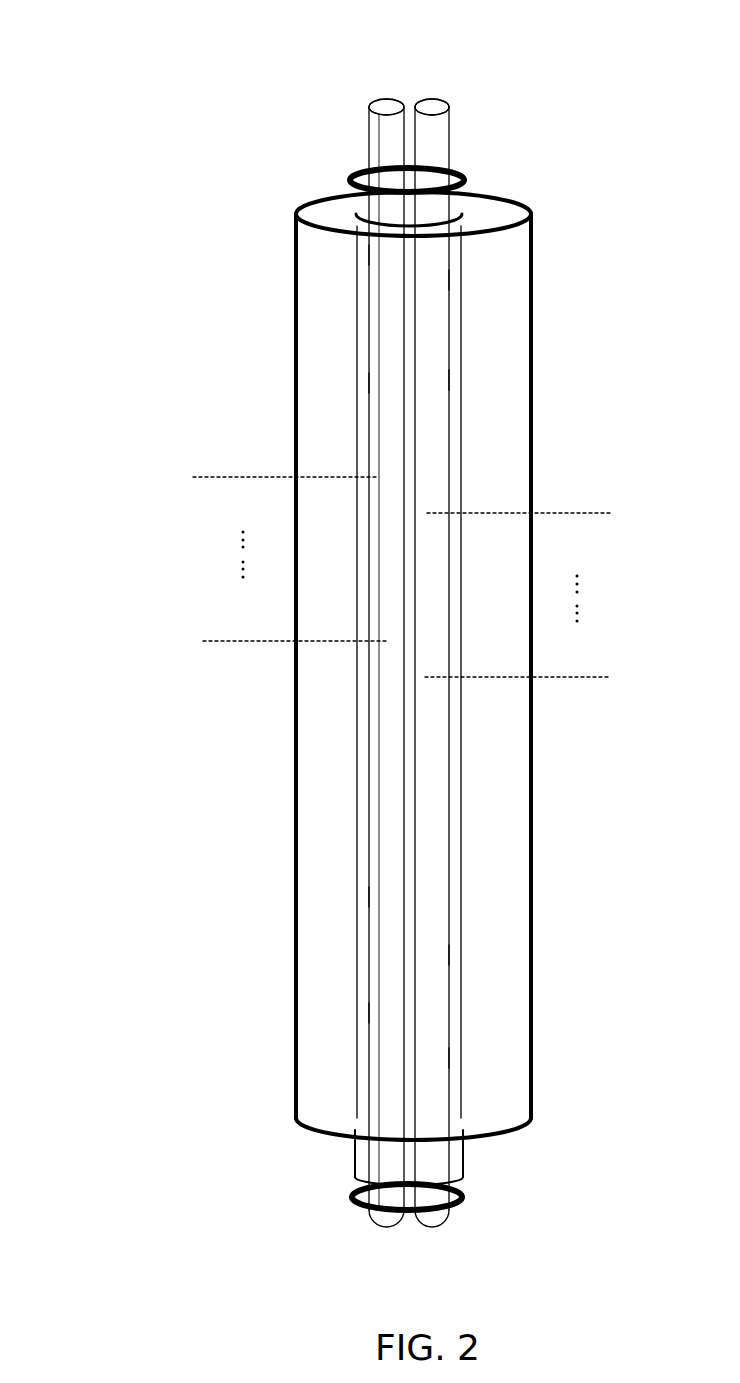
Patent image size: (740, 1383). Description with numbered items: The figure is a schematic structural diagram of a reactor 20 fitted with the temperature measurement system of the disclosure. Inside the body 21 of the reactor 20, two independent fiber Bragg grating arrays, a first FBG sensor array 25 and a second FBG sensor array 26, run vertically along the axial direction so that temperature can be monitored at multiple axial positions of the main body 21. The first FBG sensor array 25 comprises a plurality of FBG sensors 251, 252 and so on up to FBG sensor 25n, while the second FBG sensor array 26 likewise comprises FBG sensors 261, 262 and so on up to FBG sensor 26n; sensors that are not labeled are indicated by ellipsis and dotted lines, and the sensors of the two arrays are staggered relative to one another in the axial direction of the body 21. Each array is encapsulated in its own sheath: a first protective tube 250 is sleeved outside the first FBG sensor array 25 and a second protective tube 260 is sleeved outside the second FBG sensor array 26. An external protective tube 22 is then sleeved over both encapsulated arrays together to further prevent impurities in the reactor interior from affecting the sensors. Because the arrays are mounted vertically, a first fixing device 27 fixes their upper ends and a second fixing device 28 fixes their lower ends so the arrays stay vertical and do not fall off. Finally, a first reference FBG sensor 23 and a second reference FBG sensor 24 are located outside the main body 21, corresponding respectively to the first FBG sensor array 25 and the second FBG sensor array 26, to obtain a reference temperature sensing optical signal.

The reactor 20 is at (126, 78).
The body 21 is at (326, 1090).
The external protective tube 22 is at (362, 1163).
The first reference FBG sensor 23 is at (388, 150).
The second reference FBG sensor 24 is at (437, 147).
The first FBG sensor array 25 is at (385, 95).
The second FBG sensor array 26 is at (434, 95).
The first fixing device 27 is at (352, 181).
The second fixing device 28 is at (458, 1206).
The FBG sensor 25n is at (385, 255).
The FBG sensor 26n is at (433, 280).
The first protective tube 250 is at (380, 383).
The second protective tube 260 is at (442, 380).
The FBG sensor 252 is at (383, 897).
The FBG sensor 262 is at (430, 955).
The FBG sensor 251 is at (388, 1013).
The FBG sensor 261 is at (432, 1058).